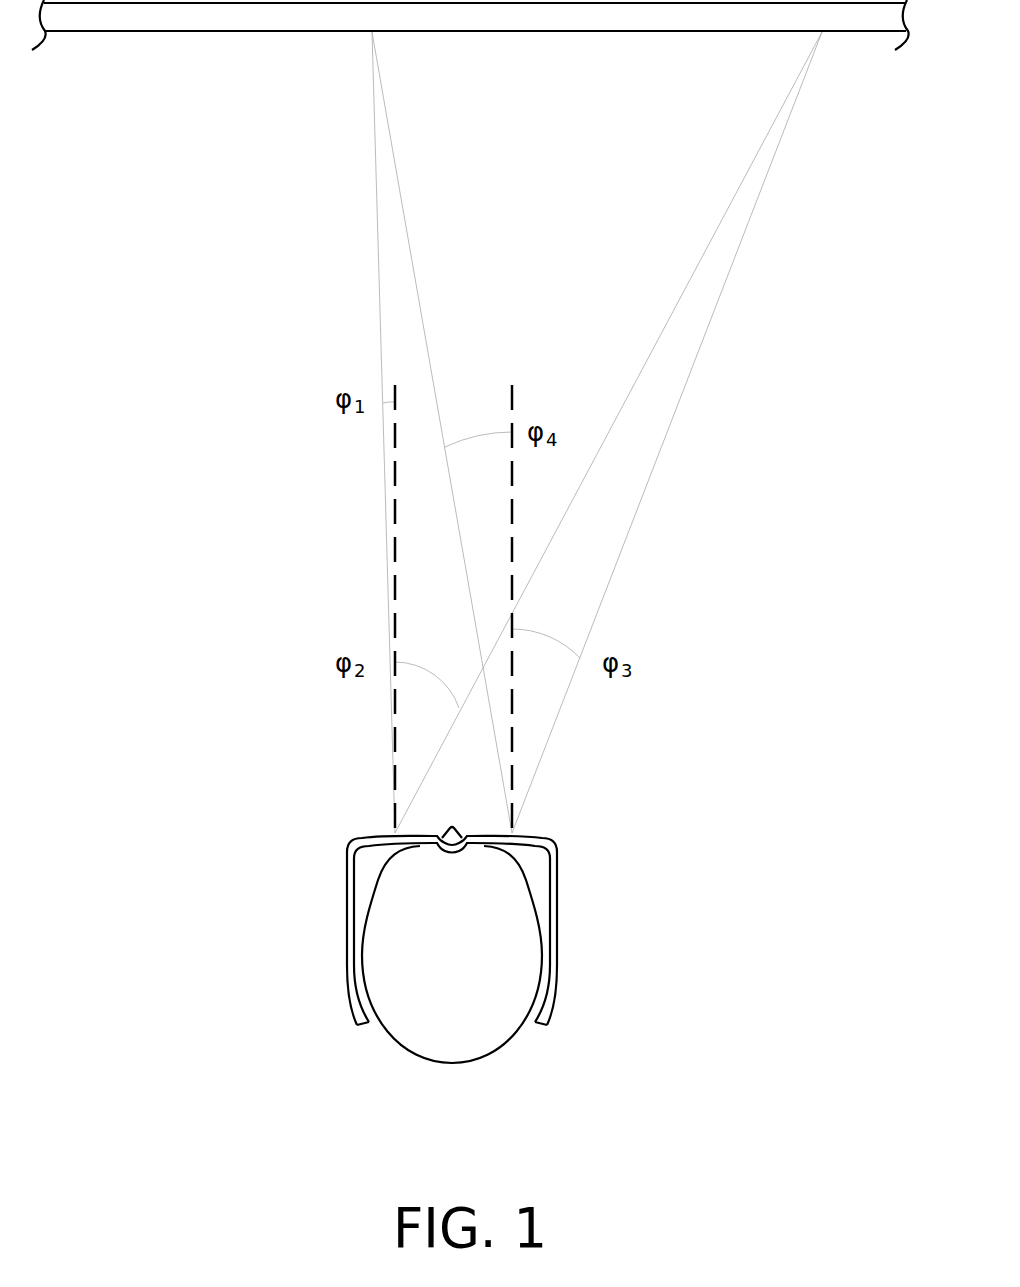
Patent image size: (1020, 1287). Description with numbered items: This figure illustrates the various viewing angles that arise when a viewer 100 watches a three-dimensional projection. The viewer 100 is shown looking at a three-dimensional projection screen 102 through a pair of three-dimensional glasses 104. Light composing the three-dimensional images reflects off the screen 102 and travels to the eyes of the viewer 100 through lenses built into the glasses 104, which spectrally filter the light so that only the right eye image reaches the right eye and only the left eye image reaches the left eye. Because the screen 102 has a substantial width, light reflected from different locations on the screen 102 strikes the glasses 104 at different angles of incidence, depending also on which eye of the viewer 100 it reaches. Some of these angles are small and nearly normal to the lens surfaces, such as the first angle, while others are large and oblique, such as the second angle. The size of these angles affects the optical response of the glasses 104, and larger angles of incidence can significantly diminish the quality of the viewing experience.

The viewer 100 is at (505, 1042).
The 3D projection screen 102 is at (145, 32).
The pair of 3D glasses 104 is at (558, 943).